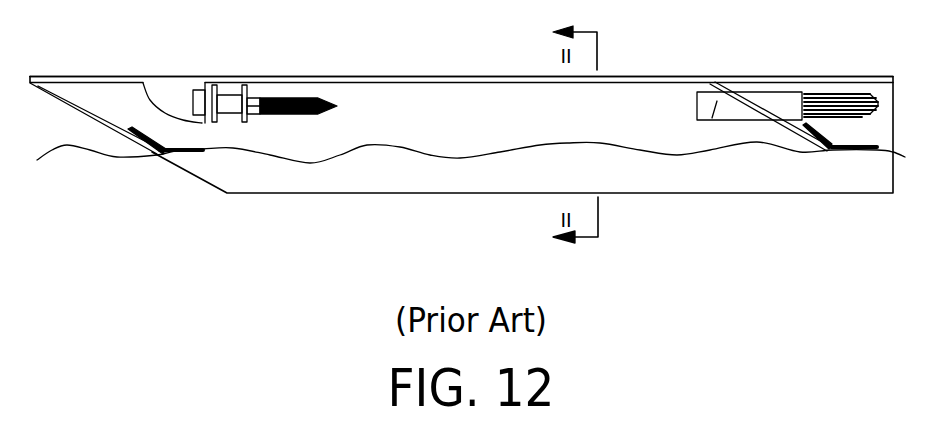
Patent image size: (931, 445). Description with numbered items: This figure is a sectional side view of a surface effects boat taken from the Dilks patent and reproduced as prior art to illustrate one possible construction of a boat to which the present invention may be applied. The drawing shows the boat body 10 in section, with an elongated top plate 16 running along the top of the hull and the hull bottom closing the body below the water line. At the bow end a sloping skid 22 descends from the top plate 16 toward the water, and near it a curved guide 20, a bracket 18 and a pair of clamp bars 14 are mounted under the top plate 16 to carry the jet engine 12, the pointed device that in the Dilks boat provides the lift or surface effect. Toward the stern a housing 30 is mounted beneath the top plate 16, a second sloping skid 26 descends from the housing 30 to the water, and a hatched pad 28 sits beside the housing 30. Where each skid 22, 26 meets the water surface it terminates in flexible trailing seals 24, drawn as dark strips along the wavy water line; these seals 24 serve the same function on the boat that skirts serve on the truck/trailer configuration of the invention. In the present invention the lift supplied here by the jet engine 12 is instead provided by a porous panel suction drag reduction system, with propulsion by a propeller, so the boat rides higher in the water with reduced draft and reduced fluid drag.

The hull body 10 is at (473, 92).
The jet engine 12 is at (253, 102).
The clamp bars 14 is at (245, 97).
The top plate 16 is at (412, 80).
The bracket 18 is at (172, 77).
The curved guide 20 is at (157, 92).
The left skid 22 is at (73, 97).
The flexible trailing seals 24 is at (170, 153).
The right skid 26 is at (758, 104).
The hatched pad 28 is at (788, 102).
The housing 30 is at (717, 101).